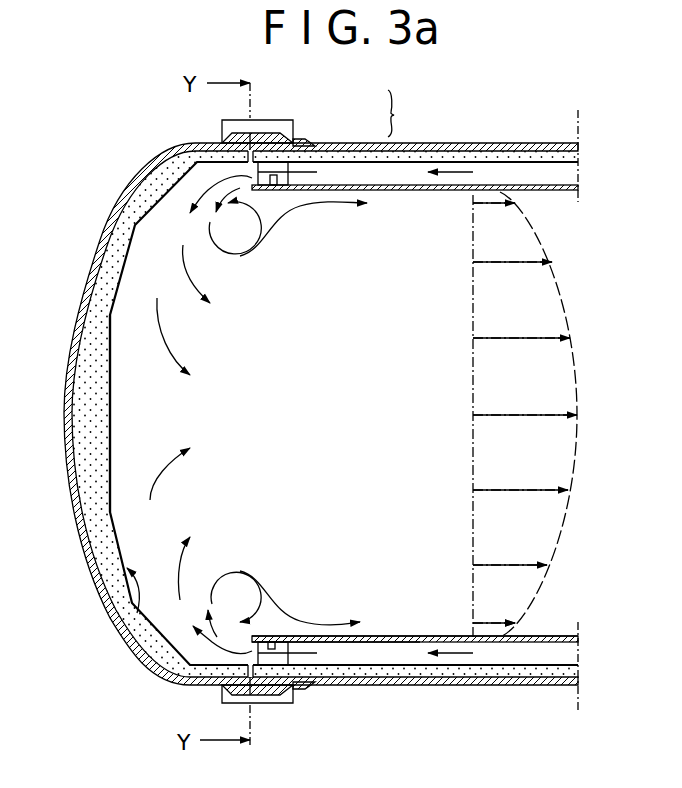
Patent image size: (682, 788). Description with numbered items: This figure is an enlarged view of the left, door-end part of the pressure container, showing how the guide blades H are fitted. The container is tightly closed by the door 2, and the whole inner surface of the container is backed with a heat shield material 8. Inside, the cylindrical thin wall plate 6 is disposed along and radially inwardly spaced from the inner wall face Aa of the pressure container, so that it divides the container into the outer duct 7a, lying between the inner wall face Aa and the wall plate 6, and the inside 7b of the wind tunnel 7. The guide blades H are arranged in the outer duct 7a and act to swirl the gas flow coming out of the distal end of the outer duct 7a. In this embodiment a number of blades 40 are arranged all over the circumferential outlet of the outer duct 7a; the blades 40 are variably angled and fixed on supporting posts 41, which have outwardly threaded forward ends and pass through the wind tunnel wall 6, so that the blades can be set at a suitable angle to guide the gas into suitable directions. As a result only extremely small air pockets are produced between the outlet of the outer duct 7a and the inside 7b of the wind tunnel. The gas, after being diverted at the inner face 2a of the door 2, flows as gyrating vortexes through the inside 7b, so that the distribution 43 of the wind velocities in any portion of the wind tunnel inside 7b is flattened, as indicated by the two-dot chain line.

The door 2 is at (133, 664).
The inner face of the door 2a is at (125, 612).
The heat shield material 8 is at (95, 492).
The cylindrical thin wall plate 6 is at (393, 650).
The wind tunnel 7 is at (442, 732).
The outer duct 7a is at (422, 649).
The inside of wind tunnel 7b is at (378, 606).
The blades 40 is at (296, 143).
The supporting posts 41 is at (284, 195).
The distribution of wind velocities 43 is at (556, 236).
The inner wall face of pressure container Aa is at (526, 660).
The guide blades H is at (403, 113).